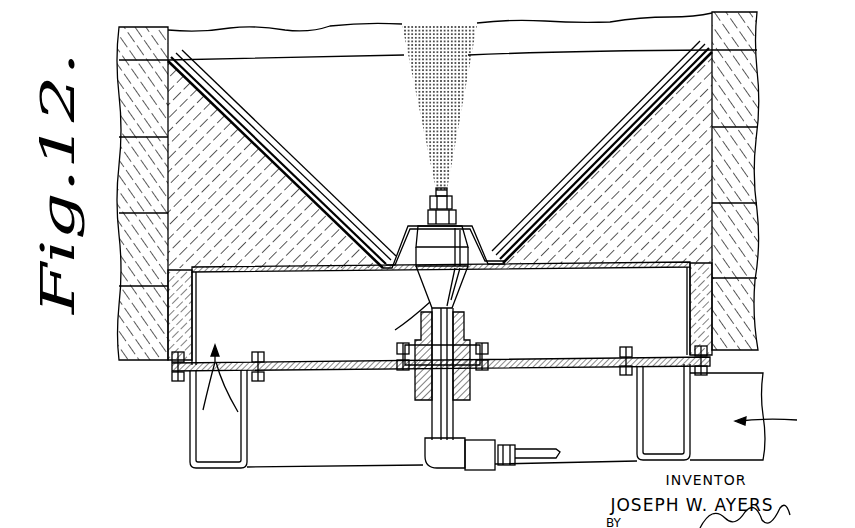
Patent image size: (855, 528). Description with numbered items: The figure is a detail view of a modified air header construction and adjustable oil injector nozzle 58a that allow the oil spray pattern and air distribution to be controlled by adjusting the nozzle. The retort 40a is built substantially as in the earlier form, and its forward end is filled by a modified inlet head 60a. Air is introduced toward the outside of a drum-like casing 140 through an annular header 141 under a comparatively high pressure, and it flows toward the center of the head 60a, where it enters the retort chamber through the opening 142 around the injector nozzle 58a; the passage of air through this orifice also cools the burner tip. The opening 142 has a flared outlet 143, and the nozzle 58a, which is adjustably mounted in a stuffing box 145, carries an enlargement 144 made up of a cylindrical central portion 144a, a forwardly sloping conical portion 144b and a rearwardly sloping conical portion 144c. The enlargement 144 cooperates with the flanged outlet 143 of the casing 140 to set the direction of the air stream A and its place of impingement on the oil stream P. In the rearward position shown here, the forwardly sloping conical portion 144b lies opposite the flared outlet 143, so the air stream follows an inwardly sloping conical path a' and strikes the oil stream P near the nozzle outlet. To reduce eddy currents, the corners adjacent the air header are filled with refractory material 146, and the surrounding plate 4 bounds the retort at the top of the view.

The work surface / ceiling plate 4 is at (550, 38).
The retort 40a is at (119, 60).
The refractory material 146 is at (250, 138).
The oil stream P is at (465, 72).
The drum-like casing 140 is at (667, 314).
The flared outlet 143 is at (486, 262).
The opening 142 is at (414, 224).
The inwardly sloping conical path a' is at (420, 177).
The enlargement 144 is at (467, 272).
The cylindrical central portion 144a is at (412, 257).
The forwardly sloping conical portion 144b is at (470, 237).
The rearwardly sloping conical portion 144c is at (460, 299).
The air stream A is at (468, 233).
The oil injector nozzle 58a is at (403, 280).
The stuffing box 145 is at (420, 368).
The annular header 141 is at (218, 458).
The inlet head 60a is at (207, 390).